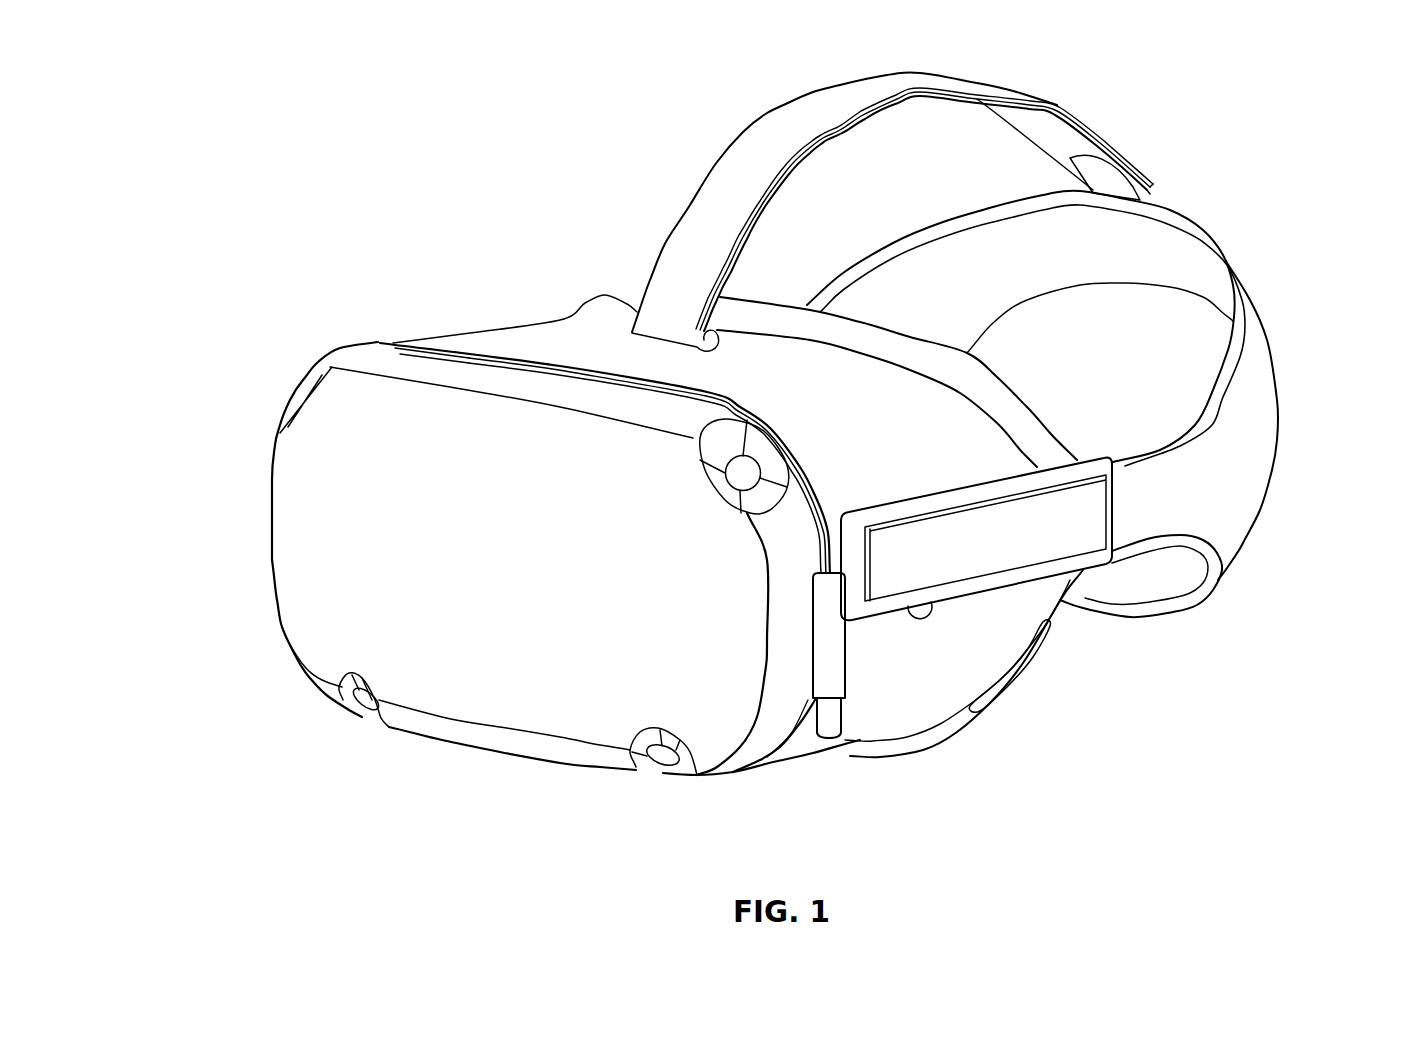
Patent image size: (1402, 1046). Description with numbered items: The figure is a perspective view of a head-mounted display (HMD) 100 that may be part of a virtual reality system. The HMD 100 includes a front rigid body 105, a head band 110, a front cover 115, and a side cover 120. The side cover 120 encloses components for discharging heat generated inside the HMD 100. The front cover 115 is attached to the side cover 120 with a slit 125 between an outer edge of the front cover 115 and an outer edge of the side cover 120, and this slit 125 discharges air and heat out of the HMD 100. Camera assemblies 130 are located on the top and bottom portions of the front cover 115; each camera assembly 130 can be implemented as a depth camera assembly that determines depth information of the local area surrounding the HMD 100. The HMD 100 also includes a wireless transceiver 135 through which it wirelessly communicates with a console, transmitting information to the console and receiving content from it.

The head-mounted display 100 is at (170, 25).
The front rigid body 105 is at (378, 345).
The head band 110 is at (1213, 237).
The front cover 115 is at (292, 513).
The side cover 120 is at (923, 717).
The slit 125 is at (460, 350).
The camera assembly 130 is at (660, 760).
The wireless transceiver 135 is at (1012, 848).